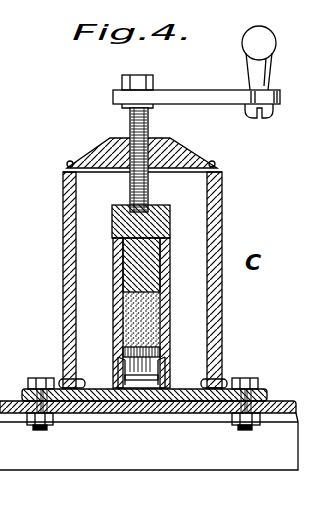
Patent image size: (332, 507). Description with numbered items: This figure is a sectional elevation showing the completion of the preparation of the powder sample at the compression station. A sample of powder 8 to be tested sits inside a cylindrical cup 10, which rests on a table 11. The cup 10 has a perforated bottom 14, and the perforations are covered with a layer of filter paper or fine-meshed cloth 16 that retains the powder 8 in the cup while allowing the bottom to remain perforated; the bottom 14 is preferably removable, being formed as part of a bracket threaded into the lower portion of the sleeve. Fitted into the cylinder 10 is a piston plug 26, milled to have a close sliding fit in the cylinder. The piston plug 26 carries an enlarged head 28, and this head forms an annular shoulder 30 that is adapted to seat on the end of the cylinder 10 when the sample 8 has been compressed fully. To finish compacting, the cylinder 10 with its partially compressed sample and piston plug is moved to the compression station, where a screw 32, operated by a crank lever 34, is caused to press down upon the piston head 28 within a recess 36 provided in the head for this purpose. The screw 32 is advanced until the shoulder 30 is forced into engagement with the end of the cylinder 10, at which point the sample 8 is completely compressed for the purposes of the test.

The powder sample 8 is at (123, 318).
The cylindrical cup 10 is at (170, 314).
The table 11 is at (277, 405).
The perforated bottom 14 is at (120, 367).
The layer of filter paper or fine-meshed cloth 16 is at (161, 338).
The piston plug 26 is at (130, 276).
The enlarged head 28 is at (172, 216).
The annular shoulder 30 is at (112, 246).
The screw 32 is at (128, 115).
The crank lever 34 is at (195, 97).
The recess 36 is at (118, 216).